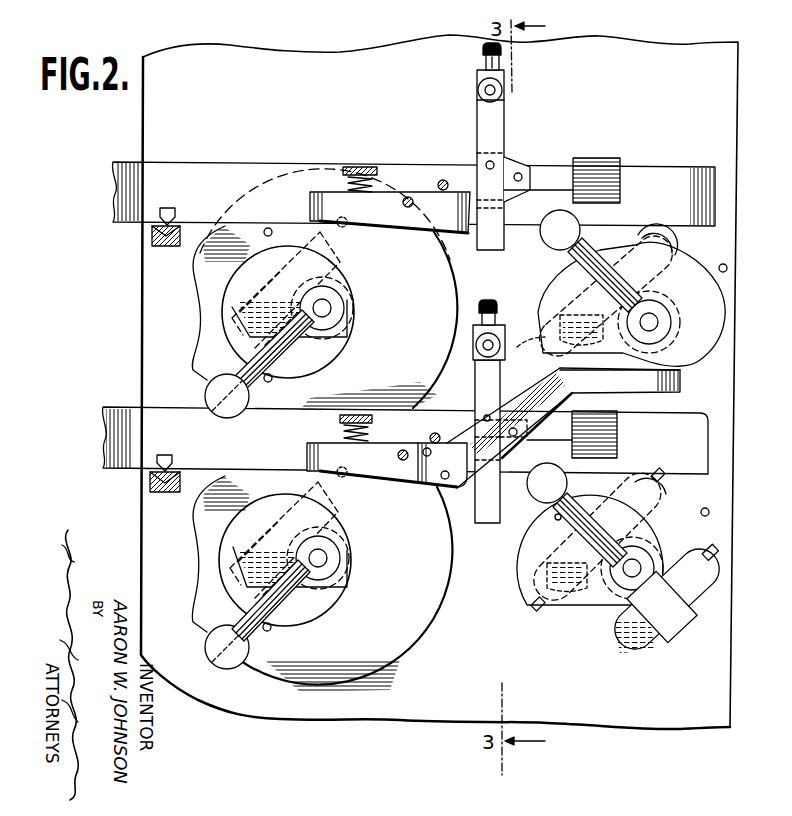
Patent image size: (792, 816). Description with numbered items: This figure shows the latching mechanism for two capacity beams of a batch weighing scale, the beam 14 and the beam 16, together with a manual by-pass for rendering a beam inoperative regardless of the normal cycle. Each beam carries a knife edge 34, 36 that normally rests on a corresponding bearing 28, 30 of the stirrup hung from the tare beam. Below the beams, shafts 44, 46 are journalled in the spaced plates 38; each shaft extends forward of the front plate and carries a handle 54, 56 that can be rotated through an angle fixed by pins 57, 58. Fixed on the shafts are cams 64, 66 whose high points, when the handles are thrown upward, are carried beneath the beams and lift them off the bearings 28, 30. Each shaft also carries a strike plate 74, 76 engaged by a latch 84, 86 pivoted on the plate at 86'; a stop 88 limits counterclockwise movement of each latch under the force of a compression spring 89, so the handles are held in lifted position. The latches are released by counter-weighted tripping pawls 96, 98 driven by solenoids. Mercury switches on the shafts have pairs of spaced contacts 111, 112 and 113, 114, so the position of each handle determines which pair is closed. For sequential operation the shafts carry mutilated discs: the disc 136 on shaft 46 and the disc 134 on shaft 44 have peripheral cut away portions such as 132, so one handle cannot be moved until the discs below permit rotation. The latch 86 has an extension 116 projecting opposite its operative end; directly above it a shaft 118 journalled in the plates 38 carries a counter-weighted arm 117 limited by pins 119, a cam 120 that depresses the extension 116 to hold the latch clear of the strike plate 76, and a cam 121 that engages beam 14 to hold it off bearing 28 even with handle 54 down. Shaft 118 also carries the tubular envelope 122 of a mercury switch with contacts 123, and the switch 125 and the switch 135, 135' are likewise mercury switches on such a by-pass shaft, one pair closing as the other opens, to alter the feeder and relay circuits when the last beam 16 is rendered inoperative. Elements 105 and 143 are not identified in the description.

The capacity beam 14 is at (173, 178).
The capacity beam 16 is at (127, 415).
The bearing 28 is at (154, 237).
The bearing 30 is at (158, 494).
The knife edge 34 is at (182, 195).
The knife edge 36 is at (165, 458).
The plate 38 is at (726, 81).
The shaft 44 is at (326, 306).
The shaft 46 is at (322, 557).
The handle 54 is at (292, 354).
The handle 56 is at (290, 615).
The pin 57 is at (265, 229).
The pin 58 is at (273, 380).
The cam 64 is at (232, 343).
The cam 66 is at (318, 598).
The strike plate 74 is at (343, 279).
The strike plate 76 is at (340, 530).
The latch 84 is at (385, 215).
The latch 86 is at (387, 462).
The latch pivot 86' is at (422, 172).
The stop 88 is at (444, 181).
The compression spring 89 is at (372, 176).
The tripping pawl 96 is at (548, 171).
The tripping pawl 98 is at (543, 440).
The cam pocket 105 is at (556, 318).
The contact 111 is at (230, 330).
The contact 112 is at (343, 226).
The contact 113 is at (222, 590).
The contact 114 is at (346, 478).
The latch extension 116 is at (660, 385).
The counter-weighted arm 117 is at (587, 252).
The shaft 118 is at (654, 322).
The pin 119 is at (730, 266).
The cam 120 is at (710, 303).
The cam 121 is at (552, 299).
The envelope 122 is at (668, 242).
The contacts 123 is at (526, 351).
The switch 125 is at (716, 556).
The cut away portion 132 is at (201, 297).
The disc 134 is at (207, 370).
The switch 135 is at (590, 577).
The switch 135' is at (623, 537).
The disc 136 is at (445, 579).
The right lower hub 143 is at (628, 572).